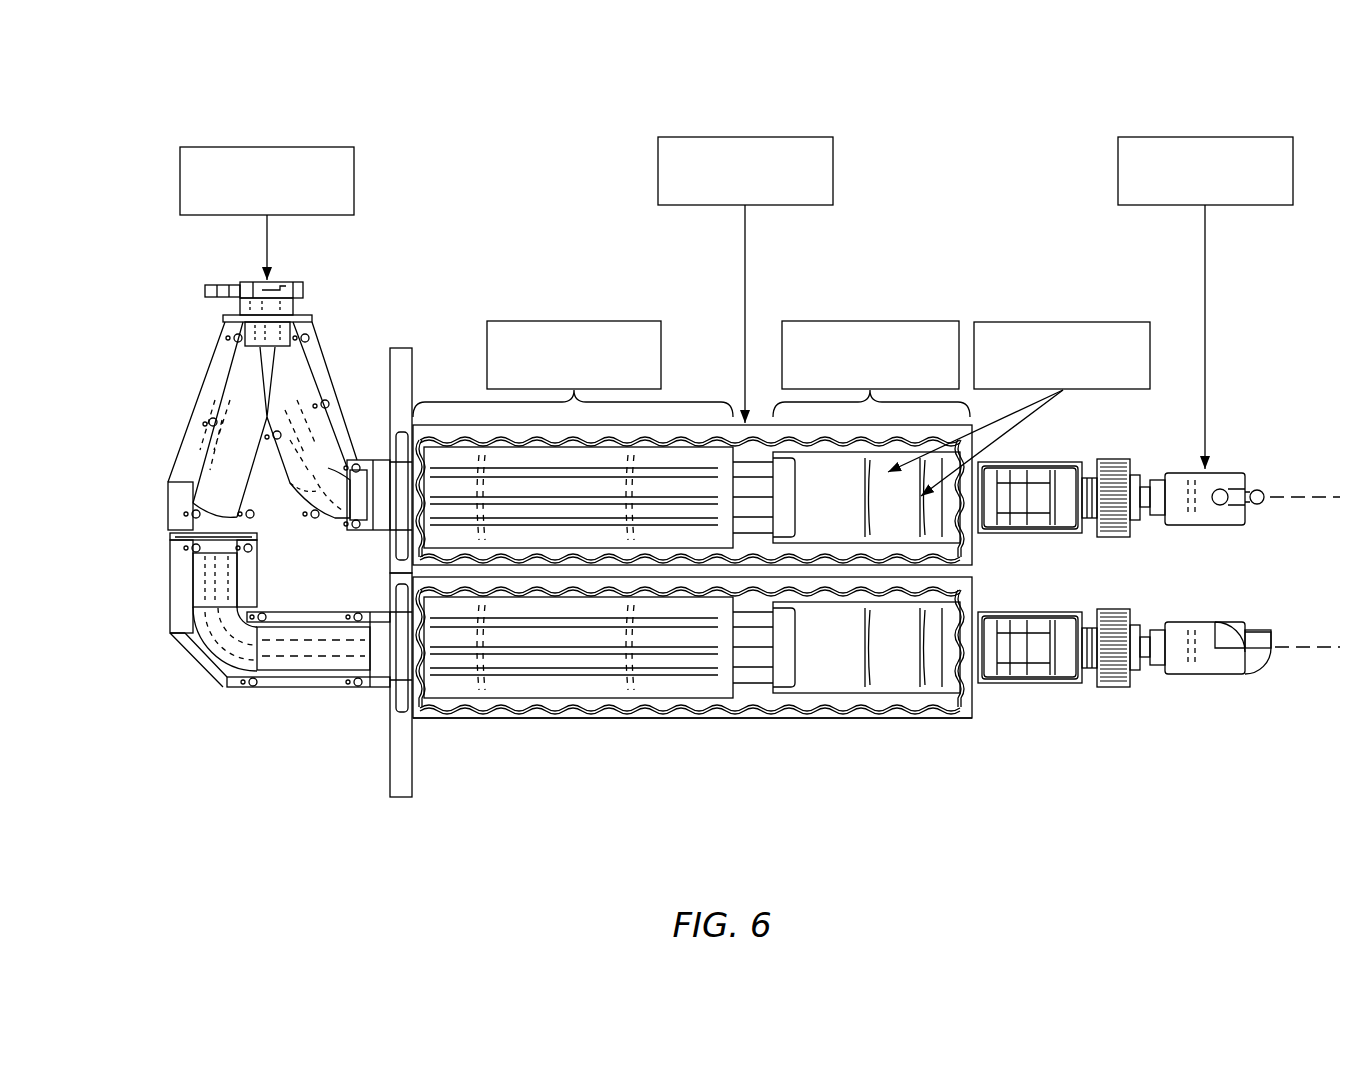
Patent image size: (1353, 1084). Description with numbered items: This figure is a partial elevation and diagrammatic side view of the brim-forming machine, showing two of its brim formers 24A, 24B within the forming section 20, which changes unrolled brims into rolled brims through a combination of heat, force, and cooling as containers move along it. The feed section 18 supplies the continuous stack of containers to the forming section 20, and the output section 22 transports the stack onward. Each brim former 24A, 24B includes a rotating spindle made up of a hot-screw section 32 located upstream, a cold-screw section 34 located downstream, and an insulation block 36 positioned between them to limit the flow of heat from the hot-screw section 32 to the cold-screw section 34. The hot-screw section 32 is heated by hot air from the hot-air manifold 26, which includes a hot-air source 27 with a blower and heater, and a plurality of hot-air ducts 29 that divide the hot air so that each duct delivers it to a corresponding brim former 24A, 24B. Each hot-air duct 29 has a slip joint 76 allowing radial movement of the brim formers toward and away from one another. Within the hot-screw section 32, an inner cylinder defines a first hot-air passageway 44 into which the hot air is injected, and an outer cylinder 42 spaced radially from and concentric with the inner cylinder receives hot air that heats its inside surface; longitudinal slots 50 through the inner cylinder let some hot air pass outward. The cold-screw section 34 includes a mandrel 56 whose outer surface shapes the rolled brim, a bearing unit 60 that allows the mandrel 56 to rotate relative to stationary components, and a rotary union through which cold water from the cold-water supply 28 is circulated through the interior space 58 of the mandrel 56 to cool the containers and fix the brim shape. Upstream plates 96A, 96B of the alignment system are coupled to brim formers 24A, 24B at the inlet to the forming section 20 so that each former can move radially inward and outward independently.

The hot-air manifold 26 is at (131, 113).
The hot-air source 27 is at (354, 182).
The hot-air duct 29 is at (174, 413).
The slip joint 76 is at (166, 537).
The feed section 18 is at (282, 741).
The upstream plate 96A is at (384, 413).
The upstream plate 96B is at (389, 725).
The forming section 20 is at (879, 224).
The brim former 24A is at (462, 412).
The brim former 24B is at (692, 716).
The hot-screw section 32 is at (574, 320).
The cold-screw section 34 is at (870, 320).
The insulation block 36 is at (745, 137).
The mandrel 56 is at (1063, 320).
The interior space 58 is at (962, 461).
The bearing unit 60 is at (1205, 137).
The outer cylinder 42 is at (504, 671).
The first hot-air passageway 44 is at (514, 722).
The longitudinal slots 50 is at (597, 653).
The output section 22 is at (1115, 701).
The cold-water supply 28 is at (1138, 691).